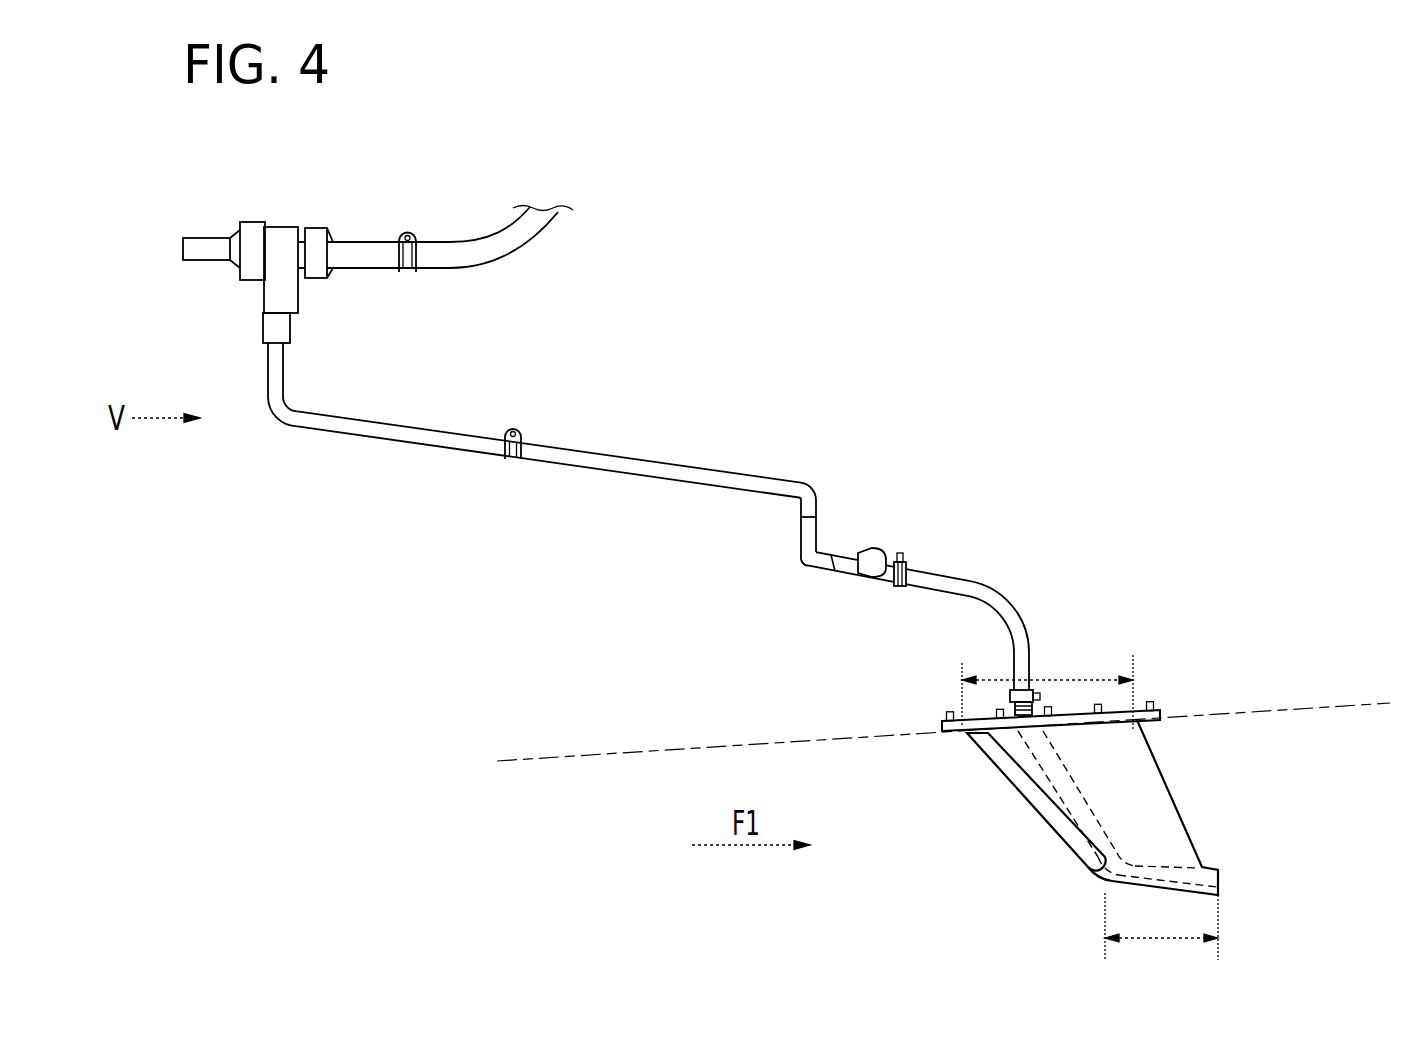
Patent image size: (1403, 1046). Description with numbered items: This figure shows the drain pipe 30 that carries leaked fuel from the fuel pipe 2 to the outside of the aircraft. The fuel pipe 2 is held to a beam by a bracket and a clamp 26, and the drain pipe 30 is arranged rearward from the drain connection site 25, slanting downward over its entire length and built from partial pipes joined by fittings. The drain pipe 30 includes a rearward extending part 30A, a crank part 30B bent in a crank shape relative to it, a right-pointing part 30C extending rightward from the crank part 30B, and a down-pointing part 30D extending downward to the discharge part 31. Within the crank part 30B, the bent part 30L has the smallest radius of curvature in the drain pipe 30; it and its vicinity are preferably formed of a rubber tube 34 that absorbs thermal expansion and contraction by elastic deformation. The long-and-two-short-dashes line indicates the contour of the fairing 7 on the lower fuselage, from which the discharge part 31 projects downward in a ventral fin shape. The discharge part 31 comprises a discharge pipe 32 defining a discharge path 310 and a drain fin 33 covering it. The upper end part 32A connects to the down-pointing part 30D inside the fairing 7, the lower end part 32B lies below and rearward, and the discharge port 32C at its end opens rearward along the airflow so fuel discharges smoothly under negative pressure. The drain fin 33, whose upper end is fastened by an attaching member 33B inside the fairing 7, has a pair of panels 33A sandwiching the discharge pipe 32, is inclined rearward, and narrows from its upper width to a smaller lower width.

The fuel pipe 2 is at (540, 236).
The fairing 7 is at (641, 753).
The drain connection site 25 is at (284, 205).
The clamp 26 is at (412, 229).
The drain pipe 30 is at (416, 414).
The rearward extending part 30A is at (601, 453).
The crank part 30B is at (780, 458).
The right-pointing part 30C is at (845, 571).
The down-pointing part 30D is at (997, 593).
The bent part 30L is at (802, 559).
The rubber tube 34 is at (800, 541).
The discharge part 31 is at (1094, 785).
The discharge pipe 32 is at (1094, 825).
The upper end part 32A is at (1000, 770).
The lower end part 32B is at (1162, 862).
The discharge port 32C is at (1220, 883).
The drain fin 33 is at (1114, 749).
The panels 33A is at (1135, 747).
The attaching member 33B is at (1157, 698).
The discharge path 310 is at (1050, 815).